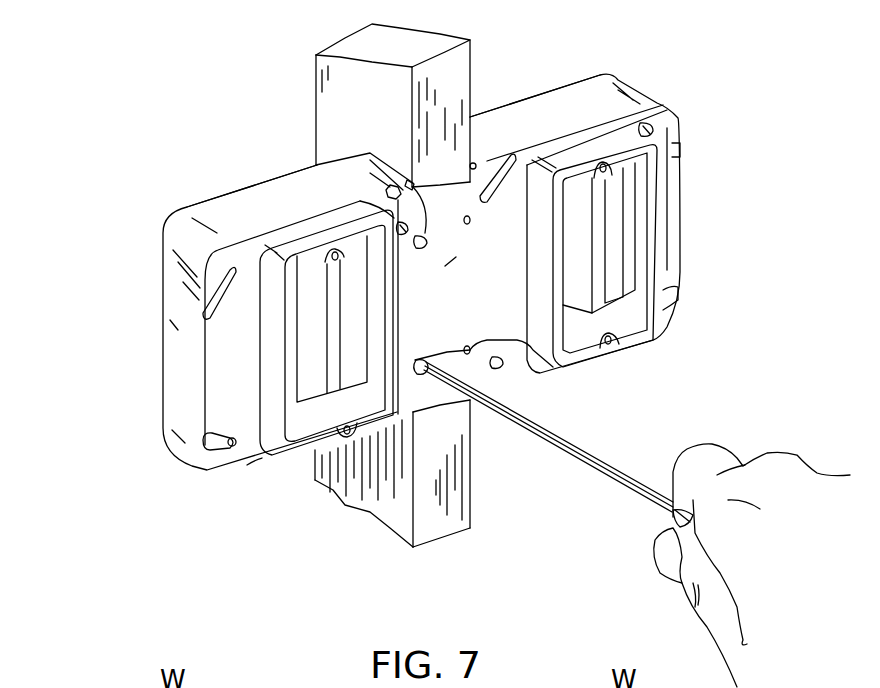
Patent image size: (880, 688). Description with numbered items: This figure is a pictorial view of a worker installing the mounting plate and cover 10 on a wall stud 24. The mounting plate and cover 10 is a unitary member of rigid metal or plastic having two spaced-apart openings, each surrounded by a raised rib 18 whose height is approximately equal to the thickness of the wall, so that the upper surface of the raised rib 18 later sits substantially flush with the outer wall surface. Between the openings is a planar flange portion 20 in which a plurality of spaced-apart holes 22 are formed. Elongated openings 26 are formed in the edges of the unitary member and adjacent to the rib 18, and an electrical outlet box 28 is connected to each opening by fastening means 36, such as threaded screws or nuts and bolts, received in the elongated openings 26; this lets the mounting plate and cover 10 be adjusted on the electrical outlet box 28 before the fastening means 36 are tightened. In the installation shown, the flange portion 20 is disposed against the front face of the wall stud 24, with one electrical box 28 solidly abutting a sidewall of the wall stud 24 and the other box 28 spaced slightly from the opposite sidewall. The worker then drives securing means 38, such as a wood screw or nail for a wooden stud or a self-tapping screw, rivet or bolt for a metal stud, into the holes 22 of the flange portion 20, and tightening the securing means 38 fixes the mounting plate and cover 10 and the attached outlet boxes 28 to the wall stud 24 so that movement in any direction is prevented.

The mounting plate and cover 10 is at (115, 351).
The raised rib 18 is at (270, 448).
The planar flange portion 20 is at (450, 260).
The holes 22 is at (470, 220).
The wall stud 24 is at (320, 62).
The elongated openings 26 is at (202, 307).
The electrical outlet box 28 is at (218, 202).
The fastening means 36 is at (390, 193).
The securing means 38 is at (410, 183).